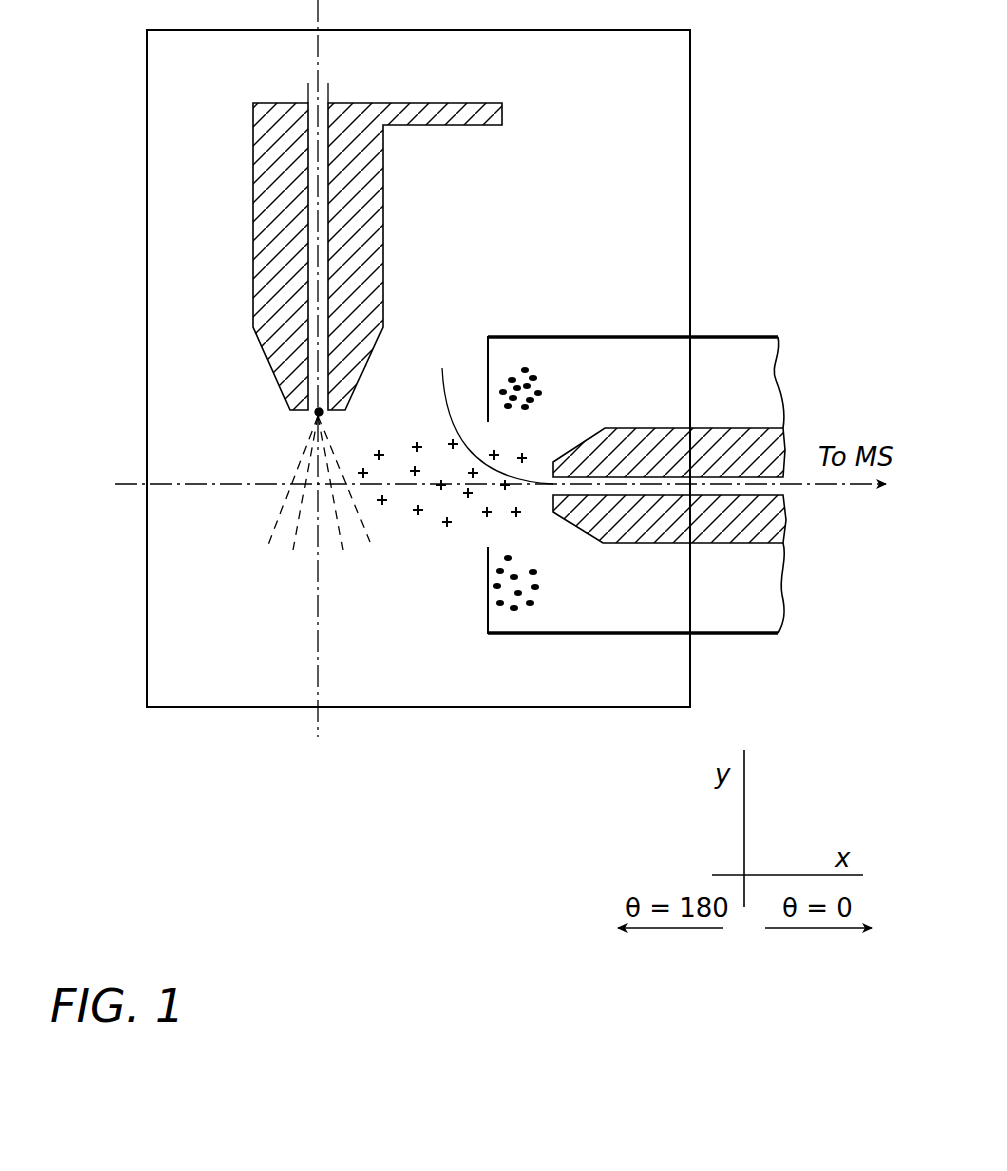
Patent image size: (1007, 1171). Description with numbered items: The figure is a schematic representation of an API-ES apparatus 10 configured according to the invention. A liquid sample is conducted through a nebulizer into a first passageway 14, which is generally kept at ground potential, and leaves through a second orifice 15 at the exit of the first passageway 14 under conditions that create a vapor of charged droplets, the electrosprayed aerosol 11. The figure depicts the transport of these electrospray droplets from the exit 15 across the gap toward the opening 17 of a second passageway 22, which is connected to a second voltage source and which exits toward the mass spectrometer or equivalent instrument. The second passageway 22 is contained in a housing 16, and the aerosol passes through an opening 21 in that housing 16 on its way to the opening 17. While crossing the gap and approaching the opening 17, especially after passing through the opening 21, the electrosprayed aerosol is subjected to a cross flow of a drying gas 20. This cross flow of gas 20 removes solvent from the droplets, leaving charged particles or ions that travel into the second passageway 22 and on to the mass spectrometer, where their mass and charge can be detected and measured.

The apparatus 10 is at (87, 667).
The electrosprayed aerosol 11 is at (264, 516).
The first passageway 14 is at (317, 352).
The second orifice 15 is at (316, 414).
The housing 16 is at (533, 336).
The opening 17 is at (489, 411).
The gas 20 is at (558, 371).
The opening in the housing 21 is at (435, 542).
The second passageway 22 is at (742, 486).